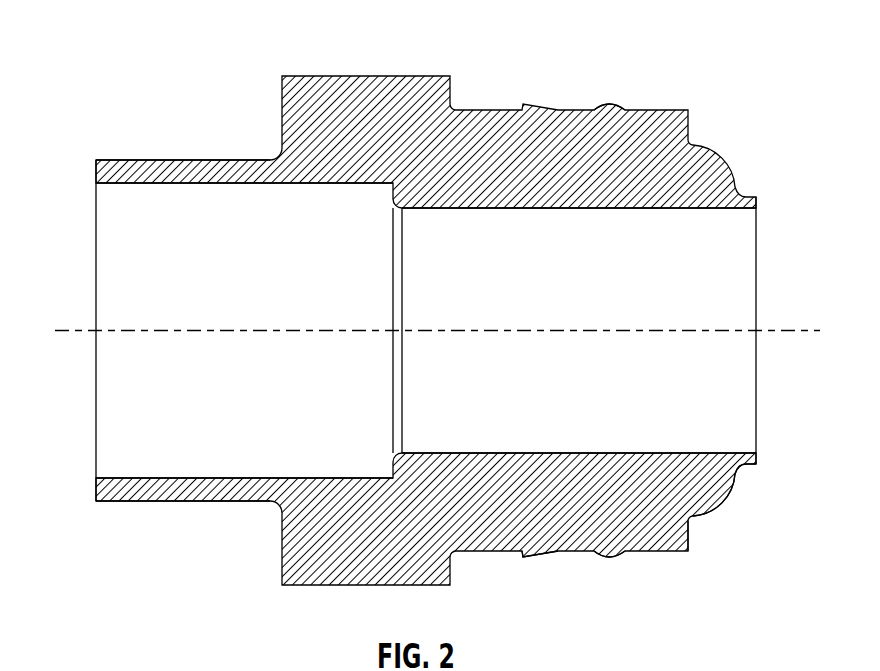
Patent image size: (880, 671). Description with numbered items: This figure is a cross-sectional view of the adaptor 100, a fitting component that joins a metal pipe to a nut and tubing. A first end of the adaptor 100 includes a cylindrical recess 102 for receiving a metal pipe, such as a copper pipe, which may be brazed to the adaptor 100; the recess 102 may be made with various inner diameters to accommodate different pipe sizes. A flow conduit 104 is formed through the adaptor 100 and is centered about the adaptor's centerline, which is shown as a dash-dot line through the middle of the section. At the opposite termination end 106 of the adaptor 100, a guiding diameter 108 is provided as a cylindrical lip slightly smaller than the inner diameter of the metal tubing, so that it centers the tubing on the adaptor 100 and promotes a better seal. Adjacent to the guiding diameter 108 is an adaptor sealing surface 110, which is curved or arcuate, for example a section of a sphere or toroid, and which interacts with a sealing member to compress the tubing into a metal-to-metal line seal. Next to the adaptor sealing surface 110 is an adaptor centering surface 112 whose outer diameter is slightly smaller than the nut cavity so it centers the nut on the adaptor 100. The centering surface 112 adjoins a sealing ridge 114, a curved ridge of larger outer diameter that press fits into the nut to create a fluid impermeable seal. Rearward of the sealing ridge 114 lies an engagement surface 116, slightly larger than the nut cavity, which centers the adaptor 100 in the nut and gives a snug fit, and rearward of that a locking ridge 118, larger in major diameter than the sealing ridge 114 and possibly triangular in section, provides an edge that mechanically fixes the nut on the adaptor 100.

The adaptor 100 is at (178, 45).
The cylindrical recess 102 is at (113, 258).
The flow conduit 104 is at (608, 396).
The termination end 106 is at (790, 264).
The guiding diameter 108 is at (746, 467).
The adaptor sealing surface 110 is at (722, 505).
The adaptor centering surface 112 is at (680, 553).
The sealing ridge 114 is at (608, 558).
The engagement surface 116 is at (572, 108).
The locking ridge 118 is at (538, 557).